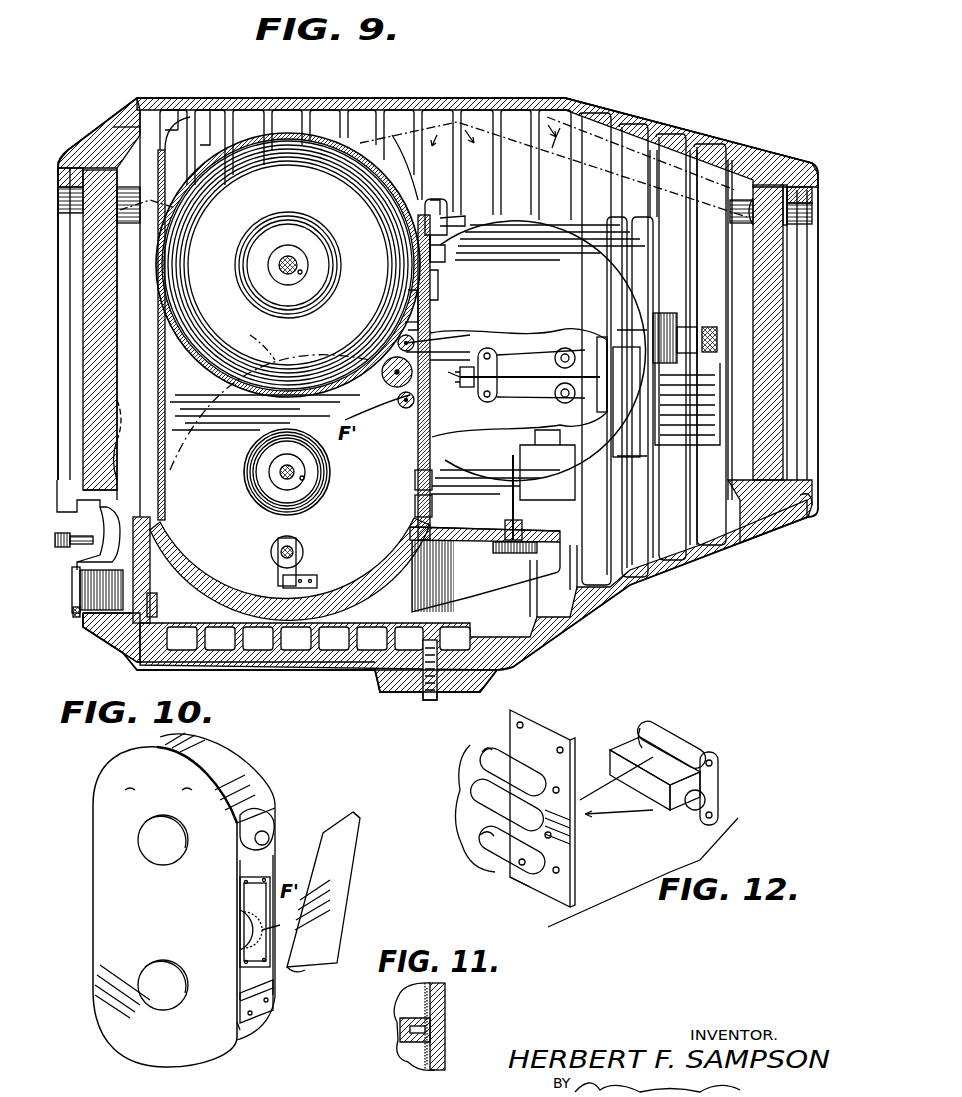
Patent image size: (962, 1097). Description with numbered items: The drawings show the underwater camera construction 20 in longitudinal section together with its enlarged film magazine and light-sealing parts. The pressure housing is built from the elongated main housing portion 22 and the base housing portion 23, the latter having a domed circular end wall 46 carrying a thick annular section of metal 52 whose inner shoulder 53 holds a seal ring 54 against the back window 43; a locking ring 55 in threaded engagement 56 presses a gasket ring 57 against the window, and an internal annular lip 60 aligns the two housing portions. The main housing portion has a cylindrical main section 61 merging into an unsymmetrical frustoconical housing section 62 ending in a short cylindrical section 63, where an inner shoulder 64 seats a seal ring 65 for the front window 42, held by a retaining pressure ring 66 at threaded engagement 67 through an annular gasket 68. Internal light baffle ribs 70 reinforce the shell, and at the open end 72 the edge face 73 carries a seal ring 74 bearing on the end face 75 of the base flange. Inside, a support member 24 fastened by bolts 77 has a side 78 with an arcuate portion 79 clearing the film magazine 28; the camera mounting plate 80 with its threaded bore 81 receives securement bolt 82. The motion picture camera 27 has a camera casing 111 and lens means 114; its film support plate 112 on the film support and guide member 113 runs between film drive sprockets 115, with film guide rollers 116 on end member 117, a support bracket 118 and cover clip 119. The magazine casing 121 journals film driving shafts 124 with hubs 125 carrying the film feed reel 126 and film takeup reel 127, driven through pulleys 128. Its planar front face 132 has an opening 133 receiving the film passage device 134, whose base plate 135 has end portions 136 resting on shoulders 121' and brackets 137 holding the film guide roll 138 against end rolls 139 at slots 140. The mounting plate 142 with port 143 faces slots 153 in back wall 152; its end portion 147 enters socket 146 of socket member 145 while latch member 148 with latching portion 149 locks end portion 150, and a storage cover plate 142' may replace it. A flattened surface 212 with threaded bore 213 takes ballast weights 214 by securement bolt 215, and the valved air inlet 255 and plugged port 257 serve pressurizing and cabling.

In FIG. 9, the underwater camera construction 20 is at (648, 88).
In FIG. 9, the main housing portion 22 is at (421, 90).
In FIG. 9, the base housing portion 23 is at (66, 160).
In FIG. 9, the support member 24 is at (355, 650).
In FIG. 9, the motion picture camera 27 is at (568, 208).
In FIG. 9, the film magazine 28 is at (351, 123).
In FIG. 10, the film magazine 28 is at (263, 766).
In FIG. 9, the front window 42 is at (775, 505).
In FIG. 9, the back window 43 is at (140, 238).
In FIG. 9, the circular end wall 46 is at (122, 640).
In FIG. 9, the thick annular section of metal 52 is at (105, 150).
In FIG. 9, the inner shoulder 53 is at (117, 452).
In FIG. 9, the seal ring 54 is at (130, 190).
In FIG. 9, the locking ring 55 is at (66, 515).
In FIG. 9, the threaded engagement 56 is at (122, 520).
In FIG. 9, the gasket ring 57 is at (117, 420).
In FIG. 9, the internal annular lip 60 is at (178, 112).
In FIG. 9, the main section 61 is at (463, 100).
In FIG. 9, the frustoconical housing section 62 is at (682, 128).
In FIG. 9, the short cylindrical section 63 is at (797, 170).
In FIG. 9, the inner shoulder 64 is at (748, 232).
In FIG. 9, the seal ring 65 is at (740, 185).
In FIG. 9, the retaining pressure ring 66 is at (820, 175).
In FIG. 9, the threaded engagement 67 is at (787, 185).
In FIG. 9, the annular gasket 68 is at (806, 512).
In FIG. 9, the light baffle ribs 70 is at (552, 128).
In FIG. 9, the open end 72 is at (210, 120).
In FIG. 9, the edge face 73 is at (158, 97).
In FIG. 9, the seal ring 74 is at (120, 126).
In FIG. 9, the end face 75 is at (175, 663).
In FIG. 9, the bolts 77 is at (160, 600).
In FIG. 9, the side 78 is at (448, 548).
In FIG. 9, the arcuate portion 79 is at (375, 585).
In FIG. 9, the mounting plate 80 is at (470, 520).
In FIG. 9, the threaded bore 81 is at (505, 522).
In FIG. 9, the securement bolt 82 is at (497, 555).
In FIG. 9, the camera casing 111 is at (537, 359).
In FIG. 9, the film support plate 112 is at (652, 240).
In FIG. 9, the film support and guide member 113 is at (525, 345).
In FIG. 9, the lens means 114 is at (703, 442).
In FIG. 9, the film drive sprockets 115 is at (566, 347).
In FIG. 9, the film guide rollers 116 is at (492, 350).
In FIG. 12, the film guide rollers 116 is at (674, 740).
In FIG. 9, the end member 117 is at (492, 402).
In FIG. 12, the end member 117 is at (718, 795).
In FIG. 12, the support bracket 118 is at (642, 728).
In FIG. 9, the cover clip 119 is at (452, 382).
In FIG. 12, the cover clip 119 is at (580, 800).
In FIG. 9, the magazine casing 121 is at (288, 214).
In FIG. 10, the magazine casing 121 is at (158, 789).
In FIG. 9, the shoulders 121' is at (395, 337).
In FIG. 11, the shoulders 121' is at (387, 1026).
In FIG. 9, the film driving shafts 124 is at (300, 245).
In FIG. 9, the hubs 125 is at (287, 256).
In FIG. 9, the film feed reel 126 is at (170, 340).
In FIG. 9, the film takeup reel 127 is at (248, 455).
In FIG. 10, the pulleys 128 is at (165, 855).
In FIG. 9, the planar front face 132 is at (437, 210).
In FIG. 10, the planar front face 132 is at (273, 845).
In FIG. 10, the opening 133 is at (268, 875).
In FIG. 9, the film passage device 134 is at (377, 383).
In FIG. 12, the film passage device 134 is at (458, 789).
In FIG. 9, the base plate 135 is at (400, 316).
In FIG. 12, the base plate 135 is at (535, 732).
In FIG. 11, the end portions 136 is at (447, 1002).
In FIG. 12, the end portions 136 is at (540, 888).
In FIG. 12, the brackets 137 is at (468, 825).
In FIG. 12, the film guide roll 138 is at (475, 798).
In FIG. 12, the end rolls 139 is at (490, 756).
In FIG. 9, the slots 140 is at (395, 326).
In FIG. 9, the mounting plate 142 is at (452, 285).
In FIG. 11, the mounting plate 142 is at (446, 1028).
In FIG. 10, the storage cover plate 142' is at (343, 889).
In FIG. 9, the port 143 is at (440, 392).
In FIG. 9, the socket member 145 is at (412, 505).
In FIG. 10, the socket member 145 is at (276, 1000).
In FIG. 10, the socket 146 is at (240, 1005).
In FIG. 9, the end portion 147 is at (412, 478).
In FIG. 10, the end portion 147 is at (300, 975).
In FIG. 9, the latch member 148 is at (458, 220).
In FIG. 10, the latch member 148 is at (268, 810).
In FIG. 9, the latching portion 149 is at (472, 252).
In FIG. 10, the latching portion 149 is at (254, 840).
In FIG. 9, the end portion 150 is at (420, 255).
In FIG. 10, the end portion 150 is at (356, 815).
In FIG. 9, the back wall 152 is at (440, 334).
In FIG. 9, the slots 153 is at (445, 350).
In FIG. 9, the flattened surface 212 is at (515, 675).
In FIG. 9, the threaded bore 213 is at (440, 650).
In FIG. 9, the ballast weights 214 is at (385, 692).
In FIG. 9, the securement bolt 215 is at (428, 700).
In FIG. 9, the valved air inlet 255 is at (72, 547).
In FIG. 9, the plugged port 257 is at (74, 612).